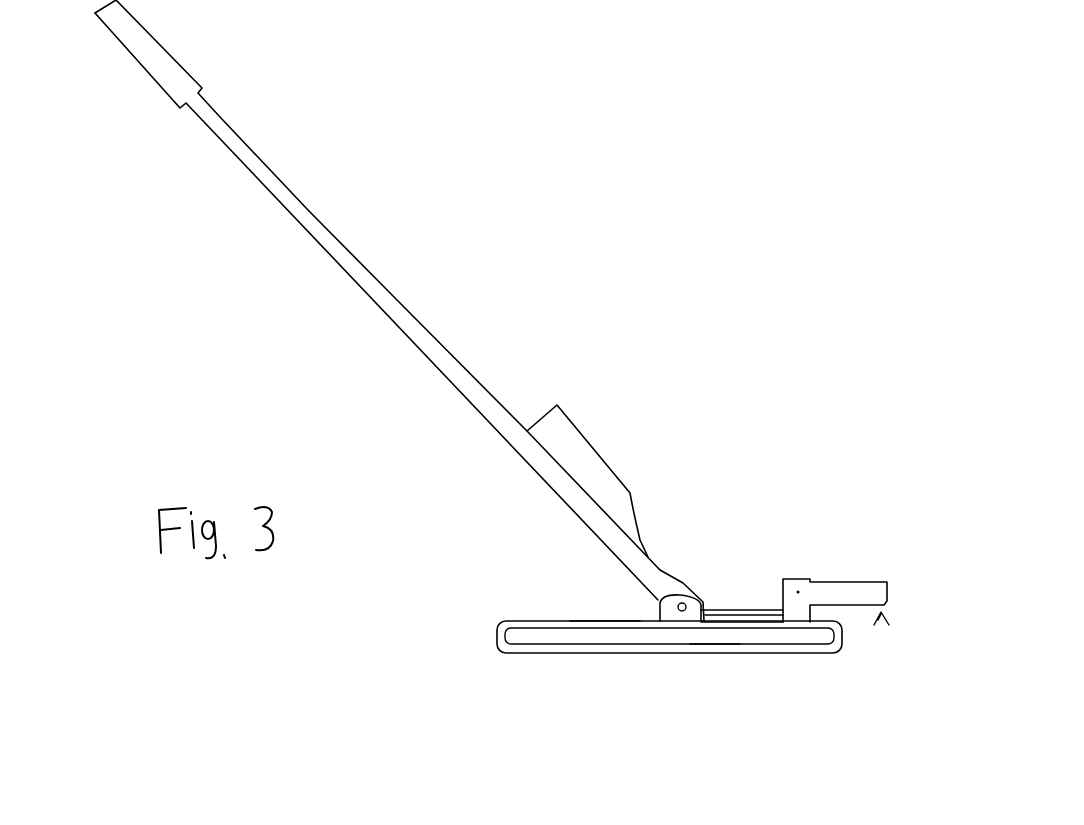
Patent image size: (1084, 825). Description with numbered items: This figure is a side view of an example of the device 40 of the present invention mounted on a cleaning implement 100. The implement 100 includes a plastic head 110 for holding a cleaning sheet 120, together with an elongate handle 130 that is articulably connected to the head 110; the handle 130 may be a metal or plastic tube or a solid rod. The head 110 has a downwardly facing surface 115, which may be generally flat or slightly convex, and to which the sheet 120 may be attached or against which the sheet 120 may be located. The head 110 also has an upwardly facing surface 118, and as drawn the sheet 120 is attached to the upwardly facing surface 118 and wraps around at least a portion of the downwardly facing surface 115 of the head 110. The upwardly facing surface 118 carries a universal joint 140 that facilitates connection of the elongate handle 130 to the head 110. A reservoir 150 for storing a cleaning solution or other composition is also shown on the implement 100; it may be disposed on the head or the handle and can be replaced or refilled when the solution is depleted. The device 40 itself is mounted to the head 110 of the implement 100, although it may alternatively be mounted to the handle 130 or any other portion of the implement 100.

The implement 100 is at (498, 373).
The elongate handle 130 is at (377, 300).
The reservoir 150 is at (628, 436).
The universal joint 140 is at (693, 538).
The head 110 is at (760, 546).
The device 40 is at (842, 557).
The cleaning sheet 120 is at (637, 656).
The upwardly facing surface 118 is at (570, 594).
The downwardly facing surface 115 is at (739, 672).